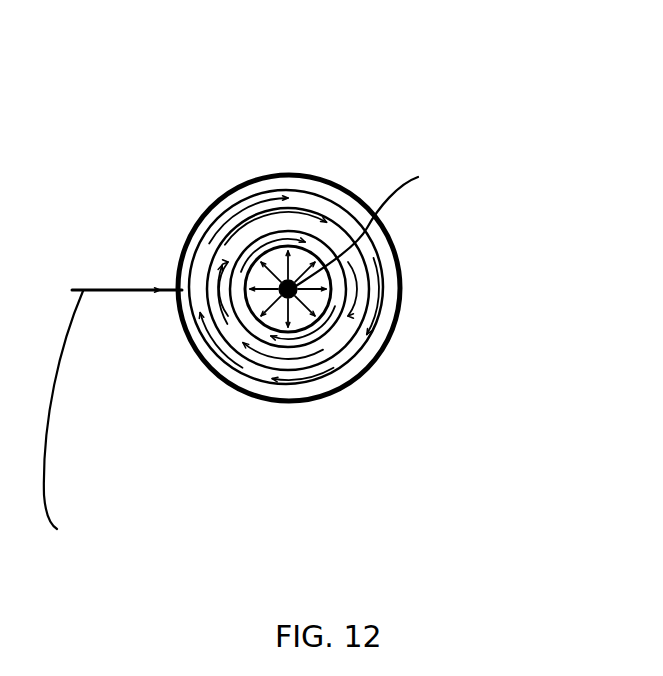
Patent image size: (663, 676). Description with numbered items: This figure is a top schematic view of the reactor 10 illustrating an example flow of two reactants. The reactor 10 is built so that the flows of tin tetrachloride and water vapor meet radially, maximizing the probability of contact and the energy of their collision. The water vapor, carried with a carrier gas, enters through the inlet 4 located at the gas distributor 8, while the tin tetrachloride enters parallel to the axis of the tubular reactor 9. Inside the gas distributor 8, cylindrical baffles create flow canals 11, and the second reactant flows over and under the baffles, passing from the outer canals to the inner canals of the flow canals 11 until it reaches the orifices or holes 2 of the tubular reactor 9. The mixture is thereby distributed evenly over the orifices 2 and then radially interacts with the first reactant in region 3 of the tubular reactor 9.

The reactor 10 is at (152, 95).
The gas distributor 8 is at (222, 200).
The tubular reactor 9 is at (313, 243).
The region 3 is at (275, 322).
The orifices or holes 2 is at (289, 242).
The flow canals 11 is at (345, 292).
The inlet 4 is at (177, 283).